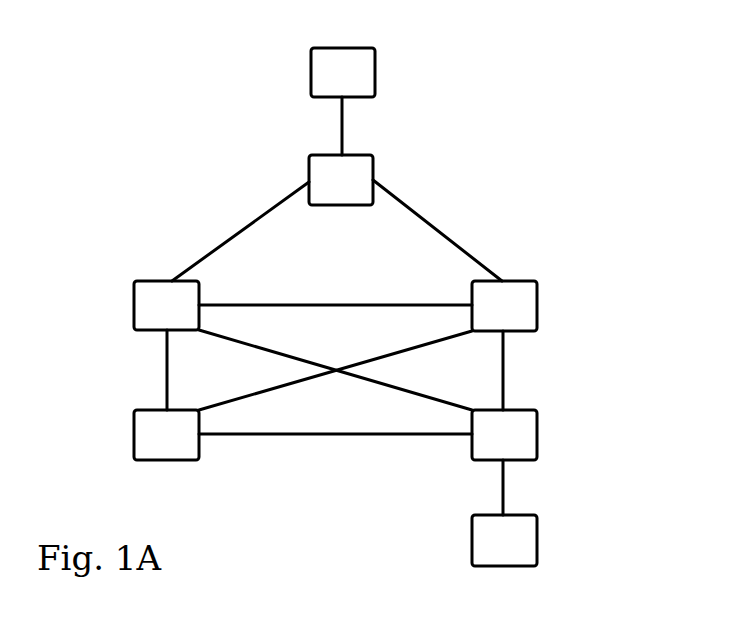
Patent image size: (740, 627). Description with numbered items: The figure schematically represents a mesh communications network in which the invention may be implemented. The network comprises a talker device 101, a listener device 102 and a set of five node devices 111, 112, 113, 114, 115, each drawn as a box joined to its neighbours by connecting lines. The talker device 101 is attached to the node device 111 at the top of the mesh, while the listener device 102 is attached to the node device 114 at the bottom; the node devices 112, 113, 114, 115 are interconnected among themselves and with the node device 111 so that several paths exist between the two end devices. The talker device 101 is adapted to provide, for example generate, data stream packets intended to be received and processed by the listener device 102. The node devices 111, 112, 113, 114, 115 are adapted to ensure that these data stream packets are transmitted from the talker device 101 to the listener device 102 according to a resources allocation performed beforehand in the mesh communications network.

The talker device 101 is at (376, 75).
The listener device 102 is at (538, 544).
The node device 111 is at (374, 160).
The node device 112 is at (200, 285).
The node device 113 is at (538, 285).
The node device 114 is at (538, 412).
The node device 115 is at (133, 455).